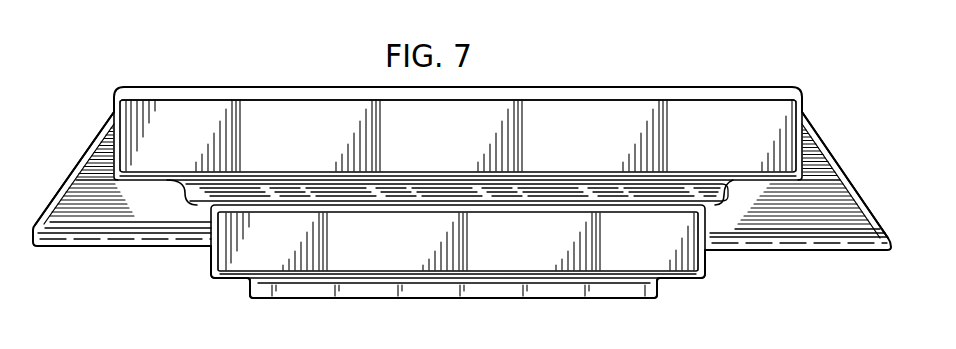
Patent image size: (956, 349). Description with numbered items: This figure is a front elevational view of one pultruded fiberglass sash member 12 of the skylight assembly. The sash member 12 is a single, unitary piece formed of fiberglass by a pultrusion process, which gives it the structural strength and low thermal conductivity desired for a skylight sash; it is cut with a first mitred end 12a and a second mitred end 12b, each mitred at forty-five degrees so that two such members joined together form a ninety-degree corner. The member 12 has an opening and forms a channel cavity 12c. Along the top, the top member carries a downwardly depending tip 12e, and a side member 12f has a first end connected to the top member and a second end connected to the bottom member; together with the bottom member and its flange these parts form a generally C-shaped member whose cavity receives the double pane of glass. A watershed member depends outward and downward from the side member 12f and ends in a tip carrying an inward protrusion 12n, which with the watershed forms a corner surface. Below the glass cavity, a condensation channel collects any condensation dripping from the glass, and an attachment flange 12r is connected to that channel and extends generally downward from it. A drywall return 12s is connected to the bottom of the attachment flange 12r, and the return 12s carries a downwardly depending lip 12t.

The pultruded fiberglass sash member 12 is at (189, 80).
The first mitred end 12a is at (108, 123).
The second mitred end 12b is at (805, 126).
The channel cavity 12c is at (79, 164).
The tip 12e is at (594, 90).
The side member 12f is at (275, 128).
The inward protrusion 12n is at (82, 228).
The attachment flange 12r is at (229, 249).
The drywall return 12s is at (231, 280).
The lip 12t is at (315, 292).